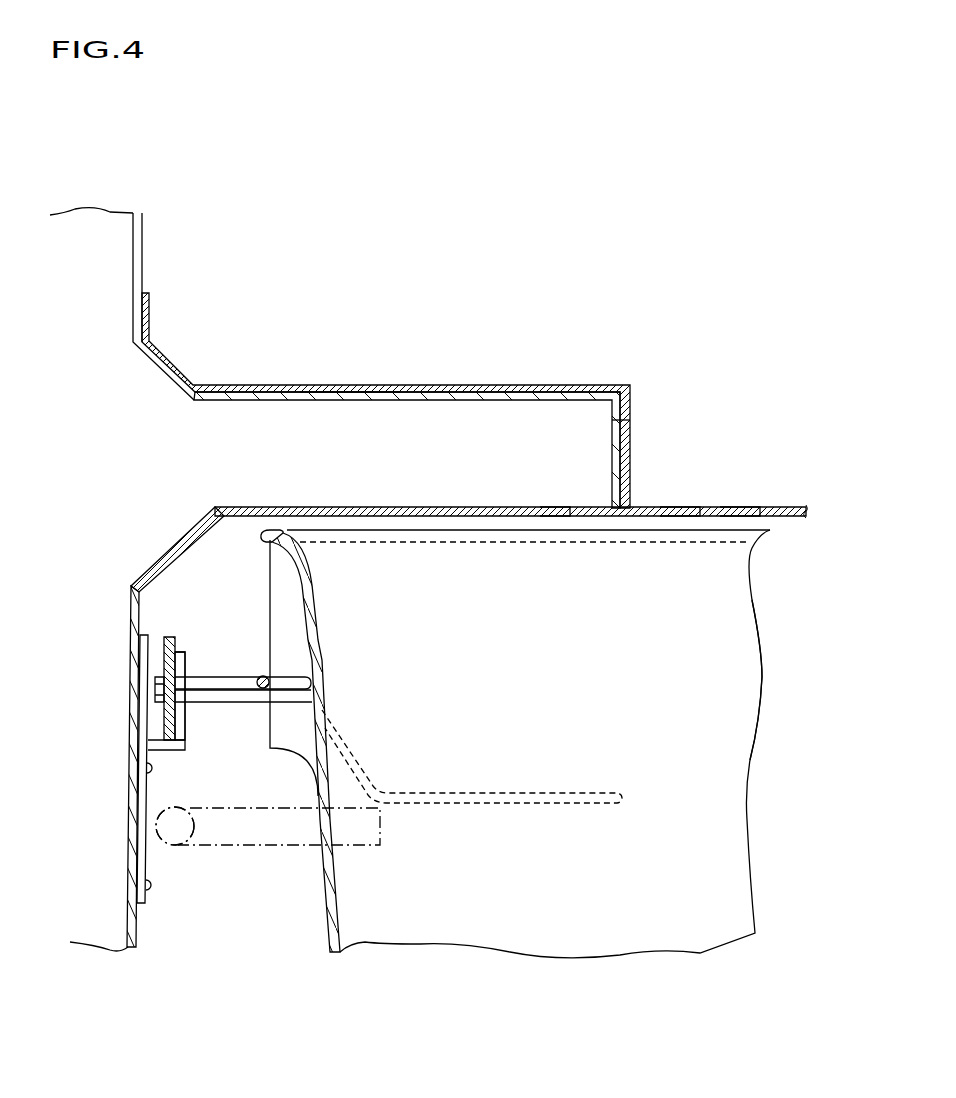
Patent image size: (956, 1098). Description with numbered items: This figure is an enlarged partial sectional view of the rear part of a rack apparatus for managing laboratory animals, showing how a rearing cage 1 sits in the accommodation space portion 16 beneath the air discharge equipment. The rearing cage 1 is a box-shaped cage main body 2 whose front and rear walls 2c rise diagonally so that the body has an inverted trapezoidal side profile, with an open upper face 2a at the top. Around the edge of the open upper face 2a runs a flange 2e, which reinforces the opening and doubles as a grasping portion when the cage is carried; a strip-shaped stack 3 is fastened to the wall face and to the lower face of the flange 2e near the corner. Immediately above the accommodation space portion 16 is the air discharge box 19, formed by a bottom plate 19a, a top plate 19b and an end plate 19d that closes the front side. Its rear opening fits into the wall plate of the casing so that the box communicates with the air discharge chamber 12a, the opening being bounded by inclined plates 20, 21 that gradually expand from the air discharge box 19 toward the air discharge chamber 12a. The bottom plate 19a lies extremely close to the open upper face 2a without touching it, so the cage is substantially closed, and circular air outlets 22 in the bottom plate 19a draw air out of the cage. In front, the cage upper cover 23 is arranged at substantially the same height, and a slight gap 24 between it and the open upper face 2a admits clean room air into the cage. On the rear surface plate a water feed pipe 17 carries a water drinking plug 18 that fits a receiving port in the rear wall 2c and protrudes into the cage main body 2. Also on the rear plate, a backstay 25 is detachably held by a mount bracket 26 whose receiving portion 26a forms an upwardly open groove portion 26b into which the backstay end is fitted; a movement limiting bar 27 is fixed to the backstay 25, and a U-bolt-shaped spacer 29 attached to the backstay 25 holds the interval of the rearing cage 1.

The rearing cage 1 is at (735, 618).
The cage main body 2 is at (722, 683).
The open upper face 2a is at (448, 531).
The front and rear walls 2c is at (323, 650).
The flange 2e is at (262, 536).
The stack 3 is at (278, 588).
The air discharge chamber 12a is at (102, 321).
The accommodation space portion 16 is at (762, 772).
The water feed pipe 17 is at (178, 810).
The water drinking plug 18 is at (248, 840).
The air discharge box 19 is at (409, 432).
The bottom plate 19a is at (385, 509).
The top plate 19b is at (332, 402).
The end plate 19d is at (630, 414).
The inclined plate 20 is at (157, 366).
The inclined plate 21 is at (178, 543).
The air outlet 22 is at (556, 510).
The cage upper cover 23 is at (677, 510).
The gap 24 is at (727, 520).
The backstay 25 is at (170, 635).
The mount bracket 26 is at (145, 805).
The receiving portion 26a is at (178, 670).
The groove portion 26b is at (155, 640).
The movement limiting bar 27 is at (237, 684).
The spacer 29 is at (222, 698).